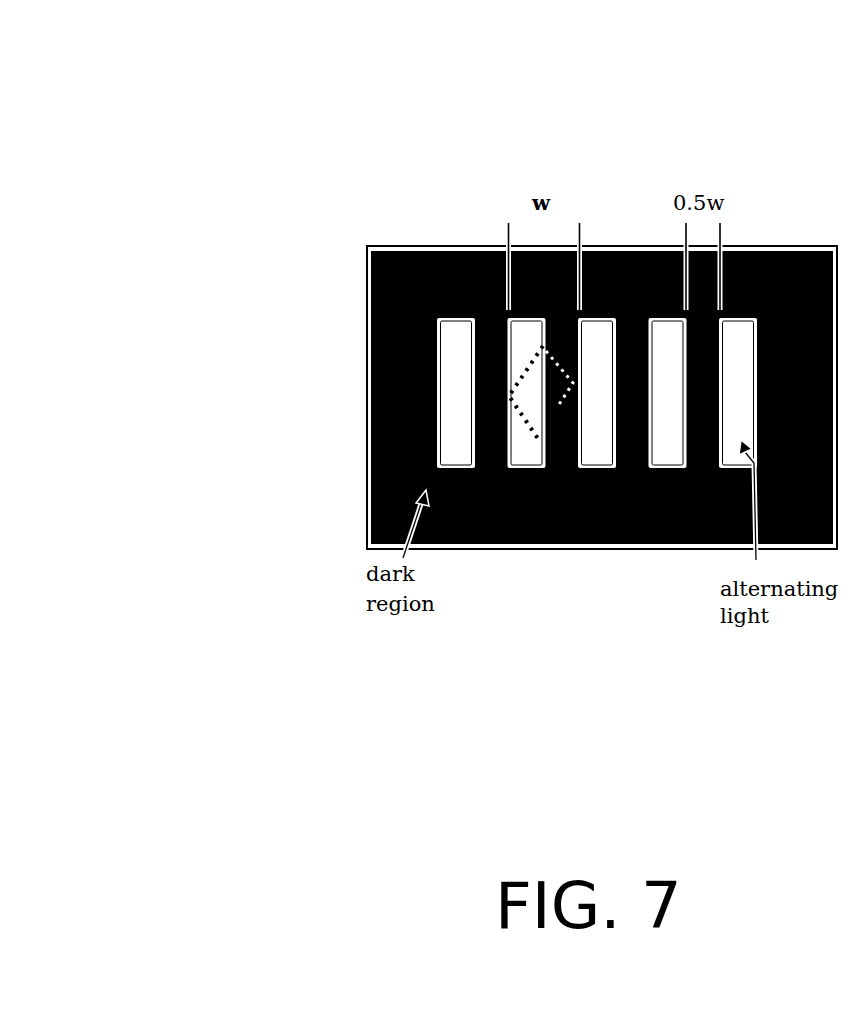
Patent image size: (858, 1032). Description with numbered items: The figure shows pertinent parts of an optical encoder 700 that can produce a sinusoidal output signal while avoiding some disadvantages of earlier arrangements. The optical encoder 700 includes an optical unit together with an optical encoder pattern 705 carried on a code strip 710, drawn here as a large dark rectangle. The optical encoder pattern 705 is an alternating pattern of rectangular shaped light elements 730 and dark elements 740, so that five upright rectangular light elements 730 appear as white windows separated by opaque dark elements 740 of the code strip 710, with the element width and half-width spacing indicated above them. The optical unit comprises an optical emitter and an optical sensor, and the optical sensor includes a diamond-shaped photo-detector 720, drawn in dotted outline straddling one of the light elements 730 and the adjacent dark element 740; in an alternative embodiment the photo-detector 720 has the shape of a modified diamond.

The optical encoder 700 is at (110, 50).
The optical encoder pattern 705 is at (393, 388).
The code strip 710 is at (782, 226).
The diamond-shaped photo-detector 720 is at (548, 425).
The light elements 730 is at (444, 368).
The dark elements 740 is at (478, 365).